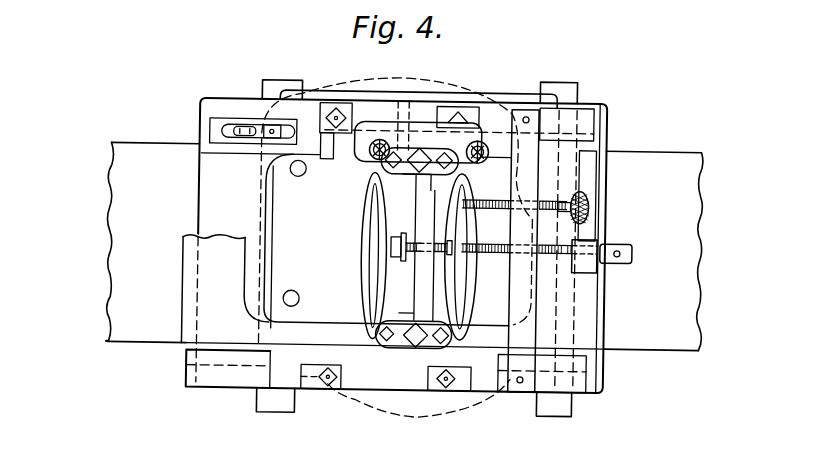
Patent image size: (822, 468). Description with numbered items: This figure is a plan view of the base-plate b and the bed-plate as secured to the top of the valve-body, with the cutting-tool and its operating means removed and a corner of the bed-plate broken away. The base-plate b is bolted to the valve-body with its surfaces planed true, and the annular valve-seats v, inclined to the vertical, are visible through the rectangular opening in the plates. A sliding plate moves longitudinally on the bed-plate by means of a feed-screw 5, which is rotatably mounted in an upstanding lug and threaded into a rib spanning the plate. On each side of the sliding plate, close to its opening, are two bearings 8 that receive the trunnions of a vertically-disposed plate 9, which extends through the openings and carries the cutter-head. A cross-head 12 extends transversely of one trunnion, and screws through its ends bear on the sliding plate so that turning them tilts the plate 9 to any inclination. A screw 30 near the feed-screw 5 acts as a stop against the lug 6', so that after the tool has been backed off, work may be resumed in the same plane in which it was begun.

The cross-head 12 is at (378, 121).
The bearings 8 is at (431, 153).
The base-plate b is at (457, 86).
The vertically-disposed plate 9 is at (361, 284).
The seats v is at (440, 273).
The screw 30 is at (590, 201).
The slide bracket 6' is at (610, 212).
The feed-screw 5 is at (624, 253).